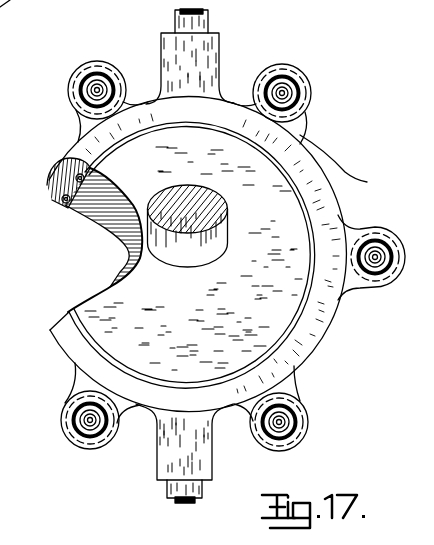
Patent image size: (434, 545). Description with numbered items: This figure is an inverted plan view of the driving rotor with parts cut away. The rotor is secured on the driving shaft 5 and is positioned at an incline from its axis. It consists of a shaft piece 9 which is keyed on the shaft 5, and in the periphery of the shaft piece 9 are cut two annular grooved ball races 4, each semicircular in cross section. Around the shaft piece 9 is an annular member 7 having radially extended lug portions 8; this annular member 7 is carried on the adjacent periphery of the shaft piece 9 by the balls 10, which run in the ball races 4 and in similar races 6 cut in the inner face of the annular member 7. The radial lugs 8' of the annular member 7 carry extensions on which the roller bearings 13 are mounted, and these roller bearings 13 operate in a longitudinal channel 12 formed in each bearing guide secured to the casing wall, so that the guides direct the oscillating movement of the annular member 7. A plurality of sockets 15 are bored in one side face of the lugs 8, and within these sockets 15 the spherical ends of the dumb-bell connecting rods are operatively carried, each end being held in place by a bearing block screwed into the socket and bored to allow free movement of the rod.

The ball races 4 is at (75, 212).
The driving shaft 5 is at (210, 206).
The races 6 is at (78, 178).
The annular member 7 is at (90, 145).
The lug portions 8 is at (225, 256).
The radial lugs 8' is at (184, 262).
The shaft piece 9 is at (192, 254).
The balls 10 is at (62, 197).
The longitudinal channel 12 is at (379, 249).
The roller bearings 13 is at (205, 25).
The sockets 15 is at (92, 421).